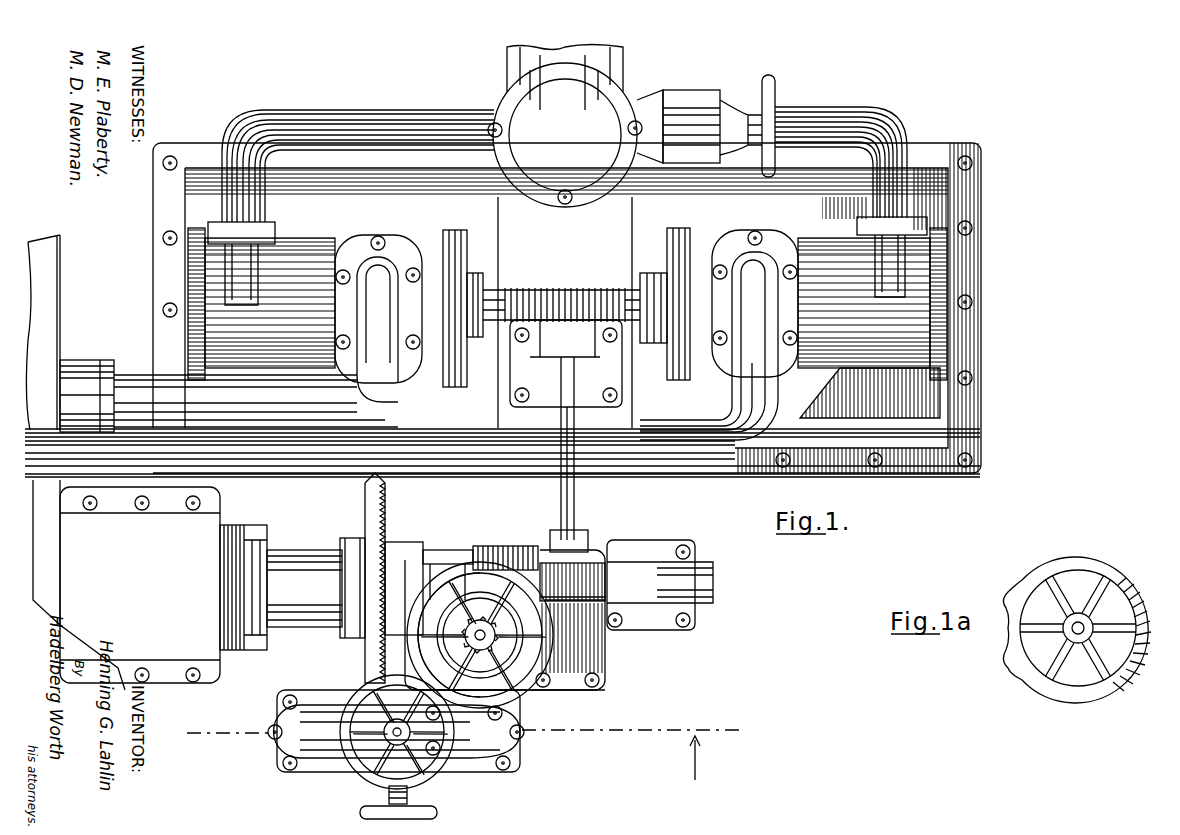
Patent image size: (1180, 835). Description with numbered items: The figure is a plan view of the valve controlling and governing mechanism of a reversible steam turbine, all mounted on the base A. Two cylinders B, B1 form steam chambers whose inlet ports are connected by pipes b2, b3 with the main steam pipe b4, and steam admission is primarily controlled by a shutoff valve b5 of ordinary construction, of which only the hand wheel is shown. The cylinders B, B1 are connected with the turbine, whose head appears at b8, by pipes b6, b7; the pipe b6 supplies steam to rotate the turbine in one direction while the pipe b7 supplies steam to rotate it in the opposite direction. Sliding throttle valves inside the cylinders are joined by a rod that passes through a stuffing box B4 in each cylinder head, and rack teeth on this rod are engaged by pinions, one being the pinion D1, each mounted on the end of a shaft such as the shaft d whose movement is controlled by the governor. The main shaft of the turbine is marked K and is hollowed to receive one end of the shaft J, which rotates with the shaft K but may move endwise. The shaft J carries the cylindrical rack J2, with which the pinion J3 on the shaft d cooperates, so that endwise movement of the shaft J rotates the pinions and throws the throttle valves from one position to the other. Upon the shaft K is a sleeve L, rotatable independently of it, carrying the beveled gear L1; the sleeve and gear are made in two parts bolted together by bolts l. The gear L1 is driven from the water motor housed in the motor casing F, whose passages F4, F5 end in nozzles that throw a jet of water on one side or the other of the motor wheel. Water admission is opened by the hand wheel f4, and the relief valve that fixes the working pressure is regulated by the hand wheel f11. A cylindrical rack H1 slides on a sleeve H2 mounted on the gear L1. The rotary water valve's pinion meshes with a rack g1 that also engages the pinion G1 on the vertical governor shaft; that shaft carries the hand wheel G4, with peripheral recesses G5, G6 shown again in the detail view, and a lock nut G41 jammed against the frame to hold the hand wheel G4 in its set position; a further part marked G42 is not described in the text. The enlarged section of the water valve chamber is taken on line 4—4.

In FIG. 1, the base A is at (985, 408).
In FIG. 1, the cylinder B is at (283, 242).
In FIG. 1, the cylinder B1 is at (785, 240).
In FIG. 1, the stuffing box B4 is at (470, 278).
In FIG. 1, the pinion D1 is at (563, 288).
In FIG. 1, the pipe b2 is at (345, 110).
In FIG. 1, the pipe b3 is at (812, 108).
In FIG. 1, the main steam pipe b4 is at (585, 94).
In FIG. 1, the shutoff valve b5 is at (680, 90).
In FIG. 1, the pipe b6 is at (343, 306).
In FIG. 1, the pipe b7 is at (765, 330).
In FIG. 1, the turbine head b8 is at (62, 300).
In FIG. 1, the shaft d is at (575, 496).
In FIG. 1, the main shaft of the turbine K is at (255, 560).
In FIG. 1, the sleeve L is at (298, 565).
In FIG. 1, the bolts l is at (345, 630).
In FIG. 1, the beveled gear L1 is at (365, 498).
In FIG. 1, the pinion G1 is at (465, 575).
In FIG. 1, the hand wheel G4 is at (555, 660).
In FIG. 1a, the hand wheel G4 is at (1000, 652).
In FIG. 1, the recess G5 is at (425, 590).
In FIG. 1a, the recess G5 is at (1038, 575).
In FIG. 1, the recess G6 is at (430, 672).
In FIG. 1a, the recess G6 is at (1035, 680).
In FIG. 1, the rack g1 is at (470, 686).
In FIG. 1, the cylindrical rack H1 is at (495, 546).
In FIG. 1, the sleeve H2 is at (480, 544).
In FIG. 1, the shaft J is at (713, 584).
In FIG. 1, the cylindrical rack J2 is at (552, 562).
In FIG. 1, the pinion J3 is at (560, 610).
In FIG. 1, the lock nut G41 is at (520, 690).
In FIG. 1, the casing part G42 is at (540, 690).
In FIG. 1, the motor casing F is at (285, 778).
In FIG. 1, the passage F4 is at (300, 725).
In FIG. 1, the passage F5 is at (518, 745).
In FIG. 1, the hand wheel f4 is at (362, 780).
In FIG. 1, the hand wheel f11 is at (440, 812).
In FIG. 1, the section line 4— 4 is at (465, 747).